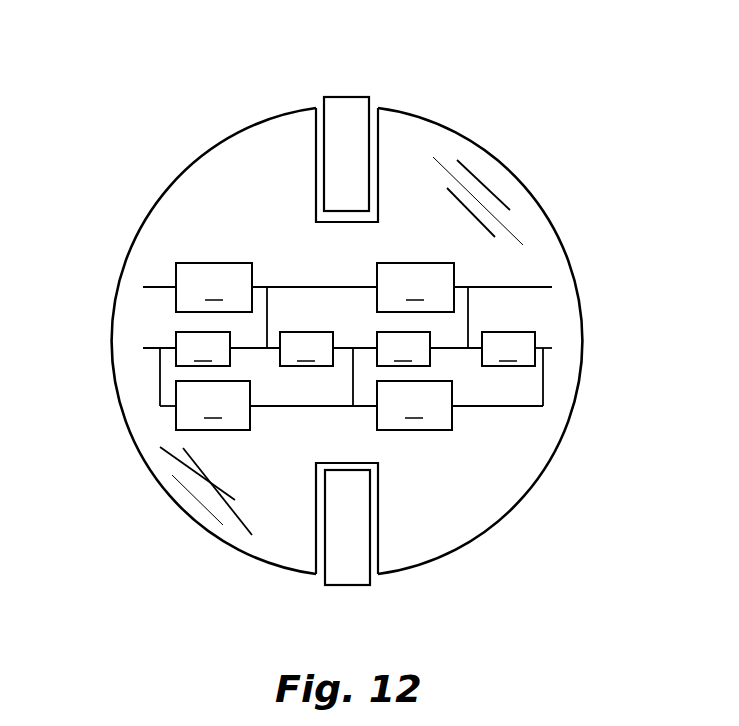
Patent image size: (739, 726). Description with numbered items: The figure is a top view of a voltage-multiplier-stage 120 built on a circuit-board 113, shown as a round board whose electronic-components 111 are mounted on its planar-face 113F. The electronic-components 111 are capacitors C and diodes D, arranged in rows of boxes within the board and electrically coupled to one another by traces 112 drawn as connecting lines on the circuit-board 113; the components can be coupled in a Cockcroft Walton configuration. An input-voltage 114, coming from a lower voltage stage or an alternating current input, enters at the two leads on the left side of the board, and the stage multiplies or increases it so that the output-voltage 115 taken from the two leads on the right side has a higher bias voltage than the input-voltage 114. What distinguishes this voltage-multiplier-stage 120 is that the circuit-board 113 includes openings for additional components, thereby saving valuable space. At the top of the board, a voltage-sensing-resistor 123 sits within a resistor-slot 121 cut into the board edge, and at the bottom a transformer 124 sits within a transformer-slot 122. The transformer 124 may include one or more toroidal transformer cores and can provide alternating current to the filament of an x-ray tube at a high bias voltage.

The voltage-multiplier-stage 120 is at (148, 170).
The circuit-board 113 is at (267, 191).
The planar-face 113F is at (477, 490).
The resistor-slot 121 is at (373, 186).
The voltage-sensing-resistor 123 is at (353, 105).
The transformer-slot 122 is at (373, 558).
The transformer 124 is at (343, 573).
The input-voltage 114 is at (137, 348).
The output-voltage 115 is at (557, 348).
The electronic-components 111 is at (327, 337).
The traces 112 is at (337, 283).